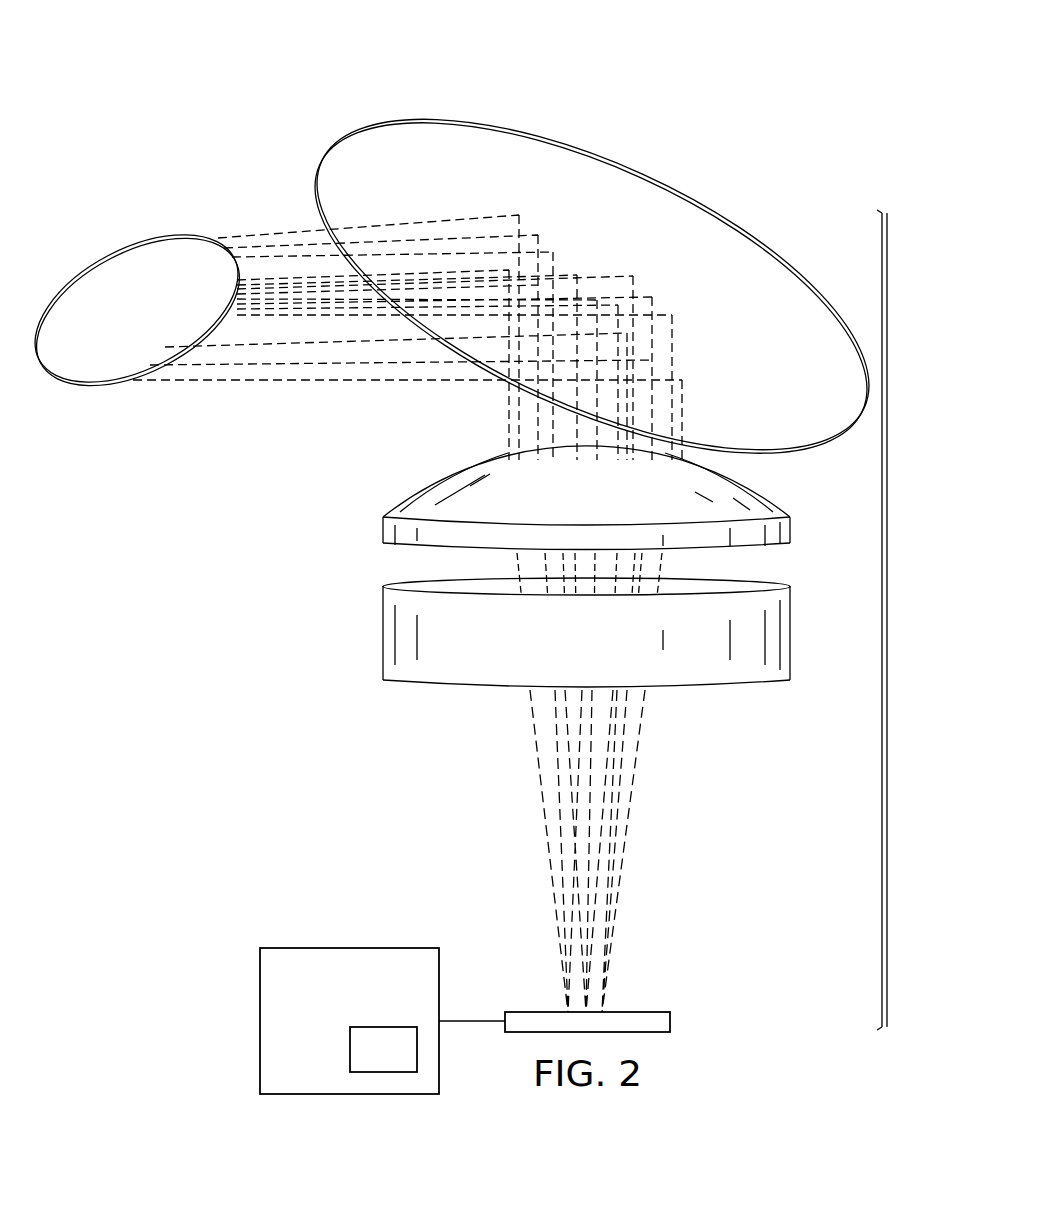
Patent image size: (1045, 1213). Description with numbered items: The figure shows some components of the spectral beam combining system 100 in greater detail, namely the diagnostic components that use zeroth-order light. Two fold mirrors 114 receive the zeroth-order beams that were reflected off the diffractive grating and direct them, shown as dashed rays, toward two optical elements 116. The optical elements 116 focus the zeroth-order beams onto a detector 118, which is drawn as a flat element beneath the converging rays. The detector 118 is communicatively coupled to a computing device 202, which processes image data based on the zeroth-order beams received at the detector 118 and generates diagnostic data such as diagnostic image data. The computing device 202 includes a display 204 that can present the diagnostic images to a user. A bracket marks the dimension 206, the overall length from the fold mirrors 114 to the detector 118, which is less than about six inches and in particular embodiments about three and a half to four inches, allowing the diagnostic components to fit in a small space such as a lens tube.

The spectral beam combining system 100 is at (237, 68).
The fold mirror 114 is at (118, 251).
The optical element 116 is at (383, 530).
The detector 118 is at (653, 1012).
The computing device 202 is at (260, 1046).
The display 204 is at (350, 1049).
The dimension 206 is at (882, 616).